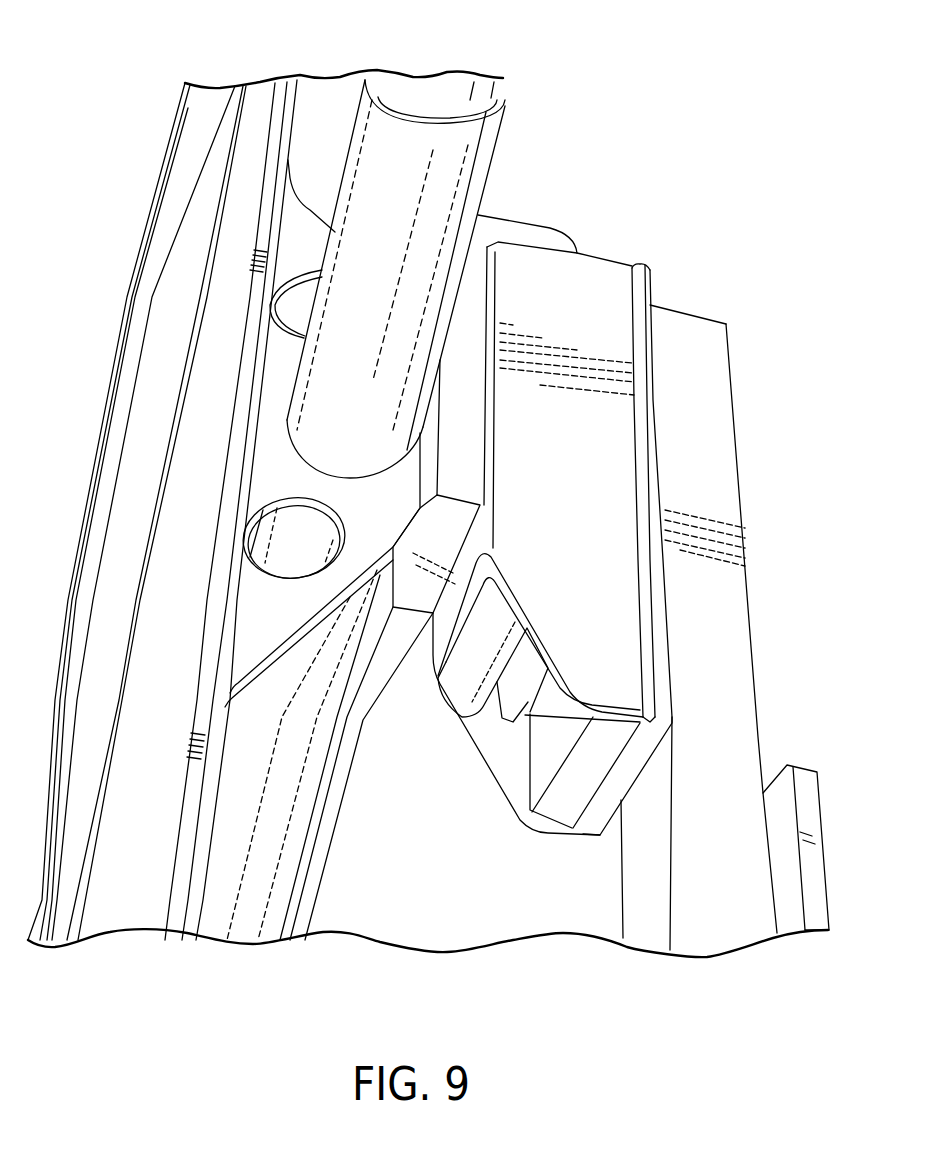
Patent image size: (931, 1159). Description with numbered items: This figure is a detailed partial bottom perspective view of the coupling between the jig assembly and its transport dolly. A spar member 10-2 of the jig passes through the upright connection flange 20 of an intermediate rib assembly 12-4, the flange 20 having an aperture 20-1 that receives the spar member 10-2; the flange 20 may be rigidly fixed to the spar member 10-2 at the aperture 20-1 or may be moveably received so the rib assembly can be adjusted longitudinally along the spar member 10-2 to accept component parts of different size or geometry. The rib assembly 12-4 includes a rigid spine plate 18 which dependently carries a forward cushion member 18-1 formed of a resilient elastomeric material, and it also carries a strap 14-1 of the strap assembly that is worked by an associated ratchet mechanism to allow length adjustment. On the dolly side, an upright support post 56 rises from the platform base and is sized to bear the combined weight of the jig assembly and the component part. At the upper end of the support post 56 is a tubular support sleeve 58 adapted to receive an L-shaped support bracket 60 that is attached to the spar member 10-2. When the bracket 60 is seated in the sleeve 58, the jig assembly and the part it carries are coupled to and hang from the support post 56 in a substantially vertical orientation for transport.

The spar member 10-2 is at (397, 238).
The intermediate rib assembly 12-4 is at (284, 131).
The strap 14-1 is at (110, 338).
The rigid spine plate 18 is at (203, 722).
The forward cushion member 18-1 is at (155, 886).
The upright connection flange 20 is at (387, 517).
The aperture 20-1 is at (340, 478).
The upright support post 56 is at (732, 847).
The tubular support sleeve 58 is at (573, 500).
The L-shaped support bracket 60 is at (453, 420).